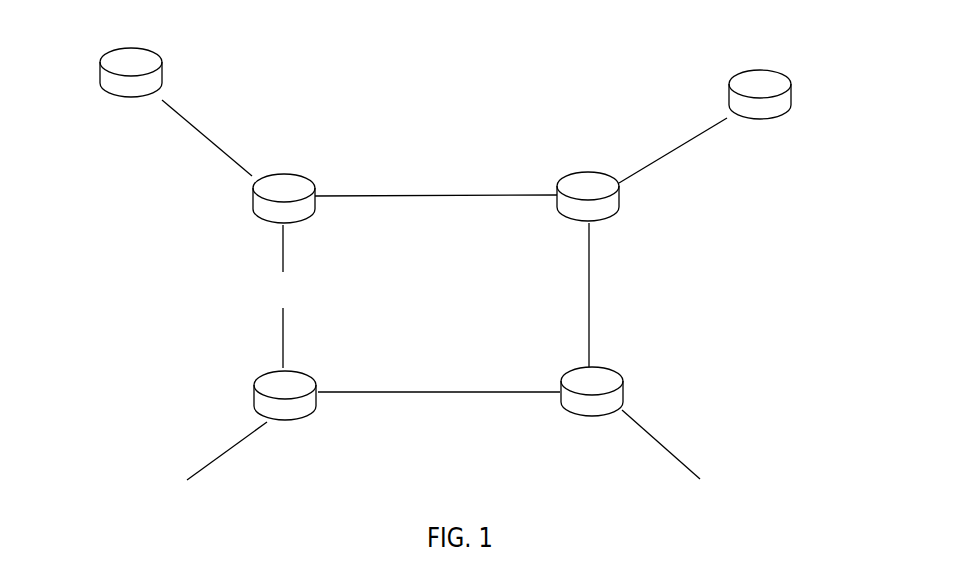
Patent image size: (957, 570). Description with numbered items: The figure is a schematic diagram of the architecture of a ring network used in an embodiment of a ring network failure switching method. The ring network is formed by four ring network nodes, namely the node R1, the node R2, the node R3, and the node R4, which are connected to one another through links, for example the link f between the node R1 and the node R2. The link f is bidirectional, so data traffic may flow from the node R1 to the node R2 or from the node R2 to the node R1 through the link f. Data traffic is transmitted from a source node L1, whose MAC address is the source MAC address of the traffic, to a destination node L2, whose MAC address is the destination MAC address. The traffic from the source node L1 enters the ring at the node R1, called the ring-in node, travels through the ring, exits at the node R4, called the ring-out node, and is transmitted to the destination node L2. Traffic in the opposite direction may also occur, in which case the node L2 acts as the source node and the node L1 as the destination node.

The source node L1 is at (147, 59).
The destination node L2 is at (746, 80).
The ring network node R1 is at (259, 198).
The ring network node R2 is at (262, 392).
The ring network node R3 is at (614, 387).
The ring network node R4 is at (588, 183).
The link f is at (275, 296).